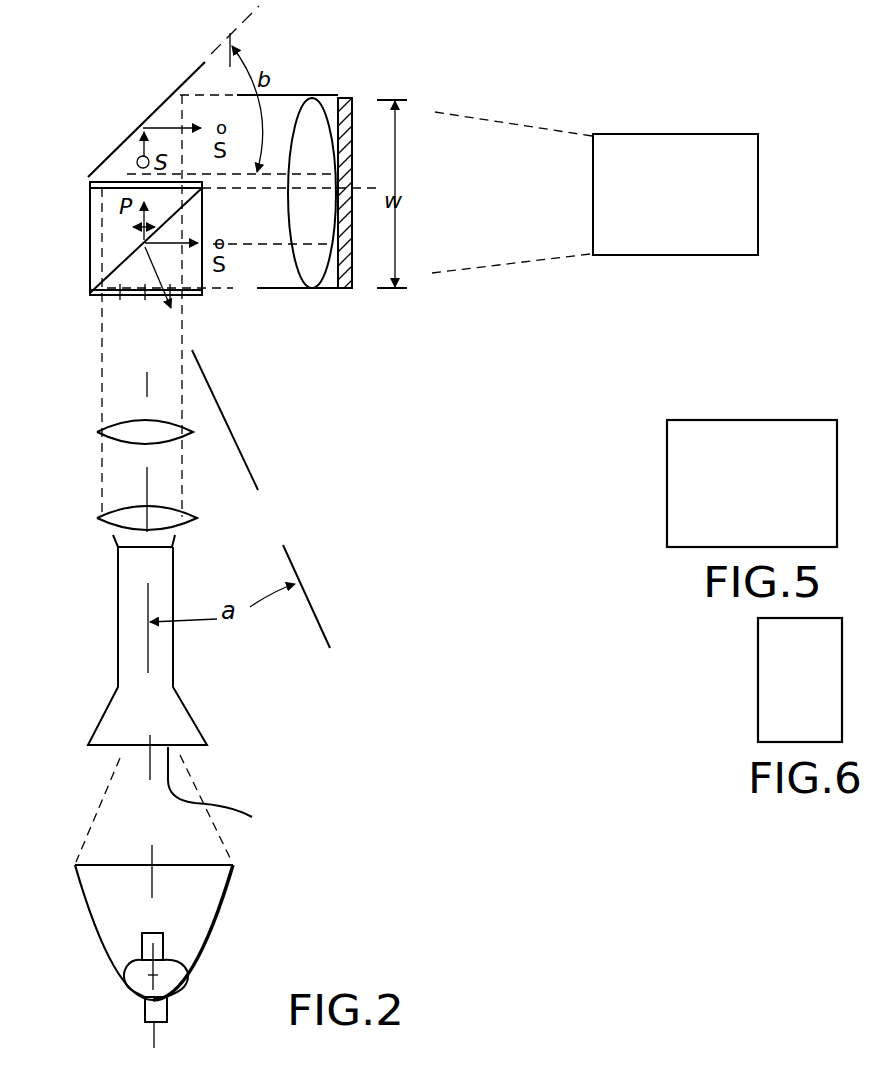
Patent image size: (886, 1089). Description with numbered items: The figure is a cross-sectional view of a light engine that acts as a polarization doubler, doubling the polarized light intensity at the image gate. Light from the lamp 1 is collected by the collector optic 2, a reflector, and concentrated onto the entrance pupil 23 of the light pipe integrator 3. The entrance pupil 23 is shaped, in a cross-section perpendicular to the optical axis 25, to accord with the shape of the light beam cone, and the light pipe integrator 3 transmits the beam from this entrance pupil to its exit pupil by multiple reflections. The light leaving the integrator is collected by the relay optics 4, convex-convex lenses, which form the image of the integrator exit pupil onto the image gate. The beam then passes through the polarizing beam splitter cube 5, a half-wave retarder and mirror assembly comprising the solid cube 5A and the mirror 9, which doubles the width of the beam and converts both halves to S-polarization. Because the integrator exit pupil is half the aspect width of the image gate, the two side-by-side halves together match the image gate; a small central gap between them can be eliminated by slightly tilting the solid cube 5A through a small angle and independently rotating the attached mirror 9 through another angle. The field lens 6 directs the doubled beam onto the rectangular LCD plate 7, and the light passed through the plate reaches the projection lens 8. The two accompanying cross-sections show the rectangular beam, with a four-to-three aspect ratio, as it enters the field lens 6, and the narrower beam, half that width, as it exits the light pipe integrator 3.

The lamp 1 is at (177, 968).
The collector optic 2 is at (232, 915).
The light pipe integrator 3 is at (197, 720).
The relay optics 4 is at (202, 432).
The polarizing beam splitter cube 5 is at (86, 178).
The solid cube 5A is at (112, 247).
The field lens 6 is at (312, 102).
The LCD plate 7 is at (353, 127).
The projection lens 8 is at (625, 245).
The mirror 9 is at (187, 83).
The entrance pupil 23 is at (228, 799).
The optical axis 25 is at (147, 385).